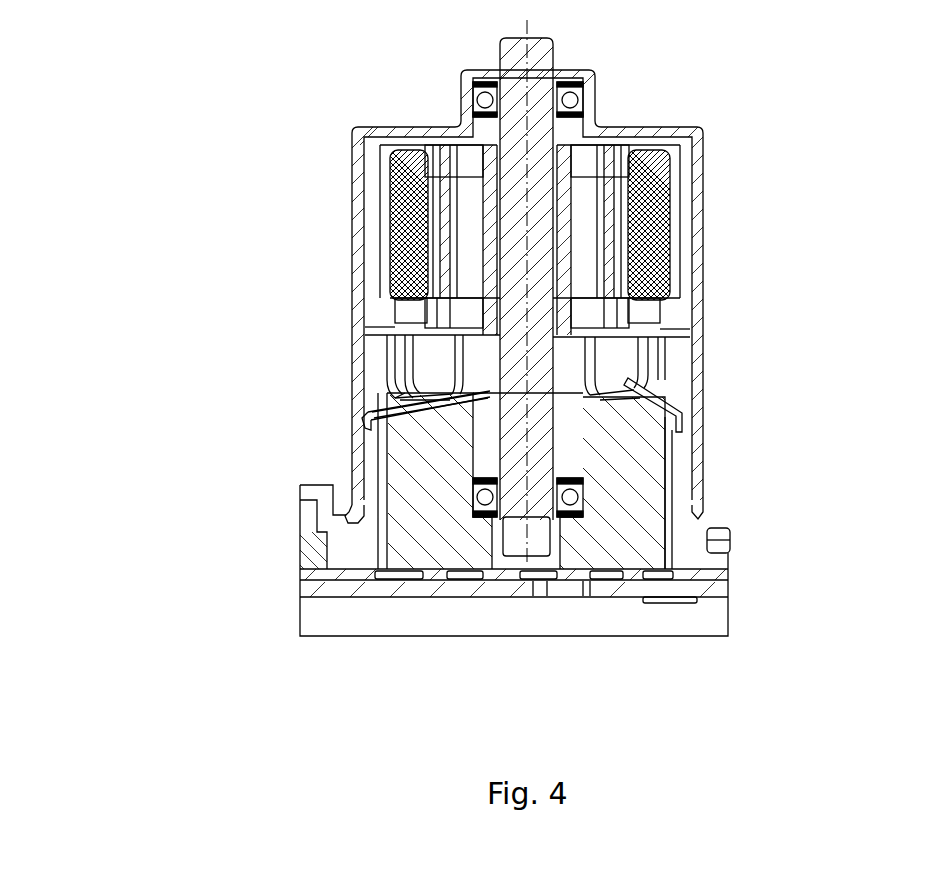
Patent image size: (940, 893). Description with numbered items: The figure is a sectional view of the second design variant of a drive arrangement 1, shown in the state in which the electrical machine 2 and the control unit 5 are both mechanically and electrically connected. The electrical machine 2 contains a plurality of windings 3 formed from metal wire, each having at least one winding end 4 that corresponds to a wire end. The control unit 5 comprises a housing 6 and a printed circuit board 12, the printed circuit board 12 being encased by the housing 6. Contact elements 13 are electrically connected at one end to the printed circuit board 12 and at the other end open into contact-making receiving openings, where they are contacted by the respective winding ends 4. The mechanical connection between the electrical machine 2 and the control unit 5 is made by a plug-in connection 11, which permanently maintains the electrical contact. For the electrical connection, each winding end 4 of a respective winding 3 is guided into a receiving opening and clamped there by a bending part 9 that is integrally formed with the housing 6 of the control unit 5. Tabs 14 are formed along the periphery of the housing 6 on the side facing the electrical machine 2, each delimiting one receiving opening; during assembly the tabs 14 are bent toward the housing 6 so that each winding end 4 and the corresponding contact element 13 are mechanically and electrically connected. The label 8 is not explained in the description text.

The drive arrangement 1 is at (268, 108).
The electrical machine 2 is at (754, 202).
The winding 3 is at (652, 192).
The winding end 4 is at (655, 381).
The control unit 5 is at (741, 500).
The housing 6 is at (627, 545).
The connecting element 8 is at (455, 388).
The bending part 9 is at (372, 412).
The plug-in connection 11 is at (342, 462).
The printed circuit board 12 is at (350, 573).
The contact element 13 is at (668, 445).
The tab 14 is at (410, 408).